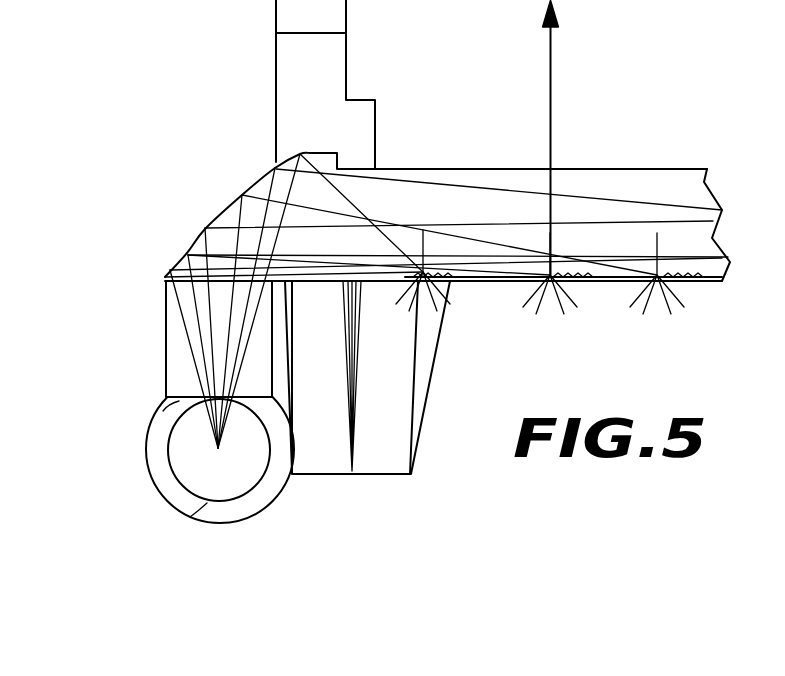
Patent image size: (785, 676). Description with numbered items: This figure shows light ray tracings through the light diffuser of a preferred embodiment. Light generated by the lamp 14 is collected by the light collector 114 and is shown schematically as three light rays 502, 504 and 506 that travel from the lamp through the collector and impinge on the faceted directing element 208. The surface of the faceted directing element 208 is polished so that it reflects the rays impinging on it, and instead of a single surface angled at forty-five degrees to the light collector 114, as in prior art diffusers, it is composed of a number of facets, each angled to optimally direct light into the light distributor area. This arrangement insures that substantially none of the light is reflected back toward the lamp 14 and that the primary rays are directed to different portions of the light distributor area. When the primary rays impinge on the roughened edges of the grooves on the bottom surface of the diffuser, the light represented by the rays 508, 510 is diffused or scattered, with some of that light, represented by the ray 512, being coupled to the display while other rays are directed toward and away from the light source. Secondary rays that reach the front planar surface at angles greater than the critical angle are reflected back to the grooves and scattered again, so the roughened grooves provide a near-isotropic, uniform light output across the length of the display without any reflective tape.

The lamp 14 is at (203, 505).
The light collector 114 is at (147, 425).
The faceted directing element 208 is at (237, 183).
The light ray 502 is at (177, 297).
The light ray 504 is at (210, 317).
The light ray 506 is at (235, 343).
The diffused light ray 508 is at (548, 288).
The diffused light ray 510 is at (658, 288).
The coupled light ray 512 is at (552, 127).